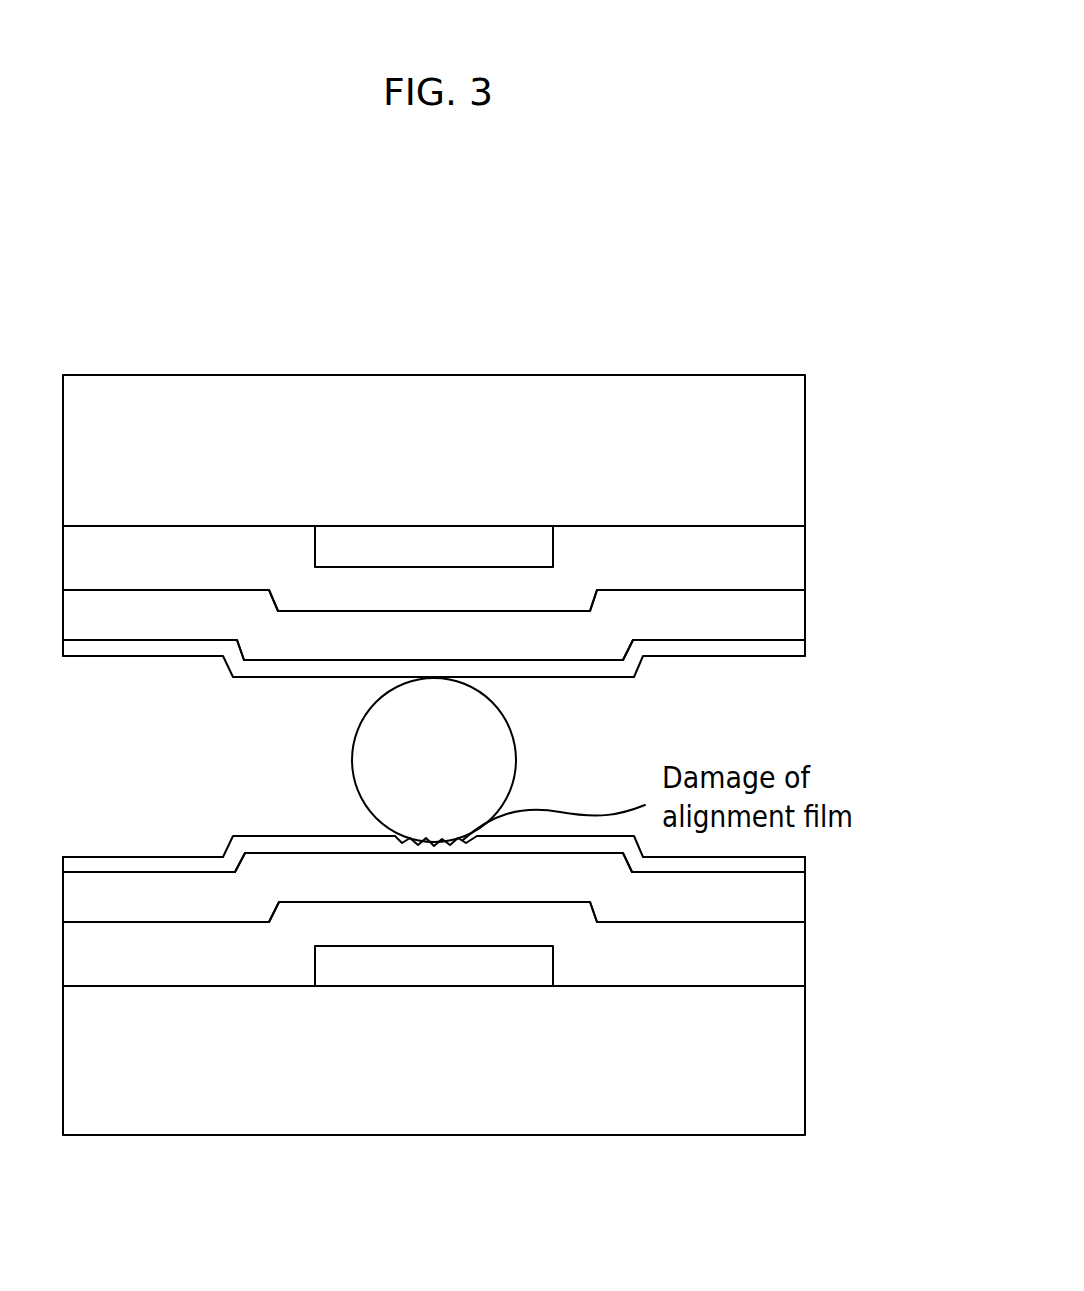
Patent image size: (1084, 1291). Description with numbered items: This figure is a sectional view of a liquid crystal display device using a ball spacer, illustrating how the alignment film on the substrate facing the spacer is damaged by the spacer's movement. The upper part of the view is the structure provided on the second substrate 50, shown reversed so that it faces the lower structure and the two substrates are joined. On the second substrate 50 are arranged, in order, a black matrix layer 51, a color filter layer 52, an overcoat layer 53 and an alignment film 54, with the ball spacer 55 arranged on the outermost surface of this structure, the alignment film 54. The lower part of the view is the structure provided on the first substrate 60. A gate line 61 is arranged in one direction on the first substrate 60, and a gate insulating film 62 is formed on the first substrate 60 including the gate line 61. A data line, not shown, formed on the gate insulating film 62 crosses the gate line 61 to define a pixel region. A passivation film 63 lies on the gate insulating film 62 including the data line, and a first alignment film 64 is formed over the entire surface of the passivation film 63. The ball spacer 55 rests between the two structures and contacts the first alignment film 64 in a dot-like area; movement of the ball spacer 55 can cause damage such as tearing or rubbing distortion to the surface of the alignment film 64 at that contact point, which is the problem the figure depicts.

The second substrate 50 is at (792, 448).
The black matrix layer 51 is at (445, 543).
The color filter layer 52 is at (792, 560).
The overcoat layer 53 is at (792, 613).
The alignment film 54 is at (792, 648).
The ball spacer 55 is at (500, 753).
The first substrate 60 is at (792, 1065).
The gate line 61 is at (442, 968).
The gate insulating film 62 is at (792, 953).
The passivation film 63 is at (792, 912).
The first alignment film 64 is at (792, 867).